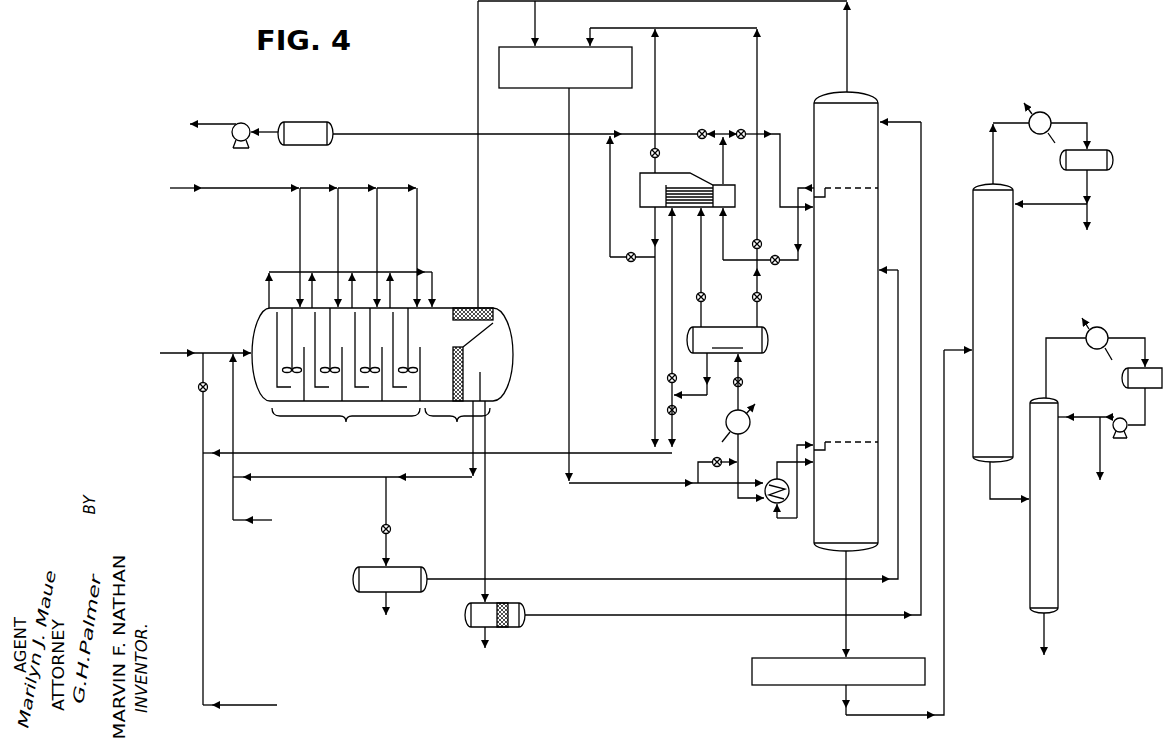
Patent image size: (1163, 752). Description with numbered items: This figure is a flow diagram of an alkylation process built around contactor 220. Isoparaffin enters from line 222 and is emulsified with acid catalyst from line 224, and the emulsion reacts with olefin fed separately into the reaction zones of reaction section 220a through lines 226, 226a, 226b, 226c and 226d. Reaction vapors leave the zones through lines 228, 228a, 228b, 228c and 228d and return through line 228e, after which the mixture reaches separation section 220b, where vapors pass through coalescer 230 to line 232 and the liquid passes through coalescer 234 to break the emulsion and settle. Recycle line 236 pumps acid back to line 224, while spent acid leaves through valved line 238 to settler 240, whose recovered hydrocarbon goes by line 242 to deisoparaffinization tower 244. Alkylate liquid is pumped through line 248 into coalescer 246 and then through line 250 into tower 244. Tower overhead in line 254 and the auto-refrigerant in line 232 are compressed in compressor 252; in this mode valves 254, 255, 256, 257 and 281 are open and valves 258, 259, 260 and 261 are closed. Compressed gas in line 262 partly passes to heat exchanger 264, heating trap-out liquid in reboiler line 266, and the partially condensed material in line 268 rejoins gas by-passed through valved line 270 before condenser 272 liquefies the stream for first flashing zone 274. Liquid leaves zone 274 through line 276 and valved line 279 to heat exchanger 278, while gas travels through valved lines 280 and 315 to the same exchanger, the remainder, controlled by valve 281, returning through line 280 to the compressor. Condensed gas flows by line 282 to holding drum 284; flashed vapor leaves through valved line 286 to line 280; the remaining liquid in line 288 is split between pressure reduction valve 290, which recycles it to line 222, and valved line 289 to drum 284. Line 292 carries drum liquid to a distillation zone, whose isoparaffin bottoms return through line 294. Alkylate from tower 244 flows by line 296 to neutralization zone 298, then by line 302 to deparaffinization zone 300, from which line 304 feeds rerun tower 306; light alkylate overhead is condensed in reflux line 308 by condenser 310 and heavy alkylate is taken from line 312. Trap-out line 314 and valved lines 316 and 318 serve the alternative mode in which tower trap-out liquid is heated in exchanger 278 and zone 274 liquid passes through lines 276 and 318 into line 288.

The contactor 220 is at (256, 333).
The reaction section 220a is at (346, 424).
The separation section 220b is at (451, 424).
The isoparaffin feed line 222 is at (183, 354).
The acid catalyst line 224 is at (234, 420).
The olefin line 226 is at (246, 188).
The olefin line 226a is at (300, 211).
The olefin line 226b is at (338, 200).
The olefin line 226c is at (377, 199).
The olefin line 226d is at (417, 211).
The vapor removal line 228 is at (285, 272).
The vapor removal line 228a is at (267, 284).
The vapor removal line 228b is at (313, 283).
The vapor removal line 228c is at (352, 283).
The vapor removal line 228d is at (390, 283).
The vapor return line 228e is at (433, 284).
The coalescer 230 is at (482, 307).
The vapor line 232 is at (477, 73).
The coalescer 234 is at (467, 357).
The recycle line 236 is at (287, 481).
The valved line 238 is at (388, 543).
The settler 240 is at (376, 584).
The line 242 is at (657, 578).
The deisoparaffinization tower 244 is at (862, 98).
The coalescer 246 is at (516, 611).
The line 248 is at (486, 528).
The line 250 is at (676, 617).
The compressor 252 is at (541, 87).
The overhead line 254 is at (537, 14).
The valve 255 is at (684, 367).
The valve 256 is at (761, 301).
The valve 257 is at (700, 130).
The valve 258 is at (676, 414).
The valve 259 is at (705, 301).
The valve 260 is at (776, 265).
The valve 261 is at (741, 130).
The compressed gas line 262 is at (655, 484).
The heat exchanger 264 is at (768, 500).
The reboiler line 266 is at (784, 519).
The line 268 is at (756, 368).
The valved by-pass line 270 is at (696, 465).
The condenser 272 is at (751, 425).
The first flashing zone 274 is at (727, 340).
The line 276 is at (686, 398).
The heat exchanger 278 is at (641, 206).
The valved line 279 is at (672, 284).
The valved gas line 280 is at (759, 73).
The valve 281 is at (762, 240).
The line 282 is at (625, 124).
The holding drum 284 is at (302, 126).
The valved line 286 is at (657, 73).
The line 288 is at (652, 433).
The valved line 289 is at (611, 258).
The pressure reduction valve 290 is at (199, 391).
The line 292 is at (221, 124).
The line 294 is at (204, 596).
The line 296 is at (838, 637).
The neutralization zone 298 is at (806, 682).
The deparaffinization zone 300 is at (978, 198).
The line 302 is at (899, 717).
The line 304 is at (1004, 503).
The rerun tower 306 is at (1059, 549).
The reflux line 308 is at (1052, 338).
The condenser 310 is at (1107, 333).
The line 312 is at (1046, 633).
The trap-out line 314 is at (800, 190).
The valved line 315 is at (720, 155).
The valved line 316 is at (701, 255).
The valved line 318 is at (676, 434).